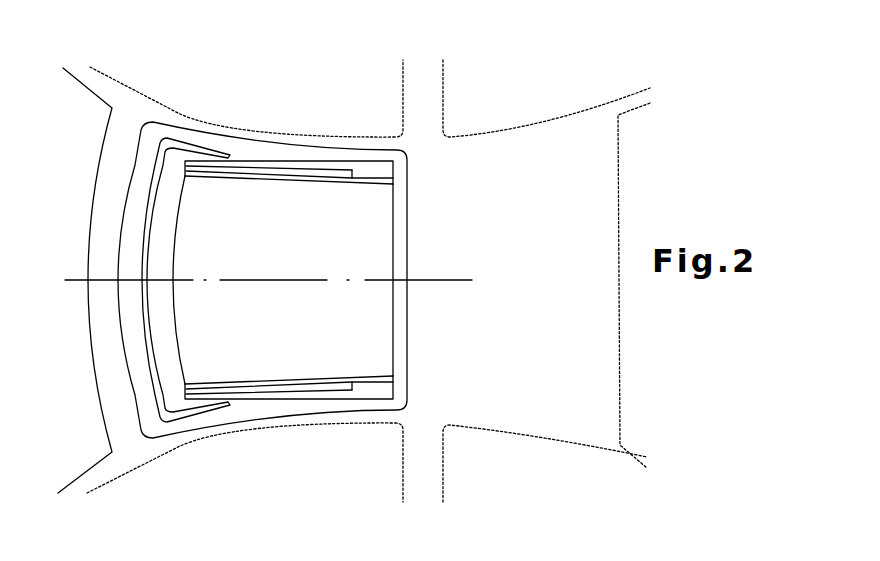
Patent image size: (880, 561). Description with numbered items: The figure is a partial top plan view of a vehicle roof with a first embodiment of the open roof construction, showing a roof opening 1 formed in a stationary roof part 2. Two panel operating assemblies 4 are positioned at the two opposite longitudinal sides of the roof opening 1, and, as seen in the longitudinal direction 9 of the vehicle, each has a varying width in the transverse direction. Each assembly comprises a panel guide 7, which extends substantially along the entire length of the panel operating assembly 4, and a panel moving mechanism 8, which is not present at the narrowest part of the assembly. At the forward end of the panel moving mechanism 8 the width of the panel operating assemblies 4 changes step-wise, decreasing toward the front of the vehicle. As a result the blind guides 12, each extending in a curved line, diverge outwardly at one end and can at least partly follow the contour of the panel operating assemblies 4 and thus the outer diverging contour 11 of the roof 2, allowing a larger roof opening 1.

The roof opening 1 is at (205, 215).
The stationary roof part 2 is at (530, 143).
The panel operating assemblies 4 is at (300, 160).
The panel guide 7 is at (262, 162).
The panel moving mechanism 8 is at (360, 170).
The longitudinal direction 9 is at (76, 281).
The outer diverging contour 11 is at (153, 107).
The blind guides 12 is at (238, 177).